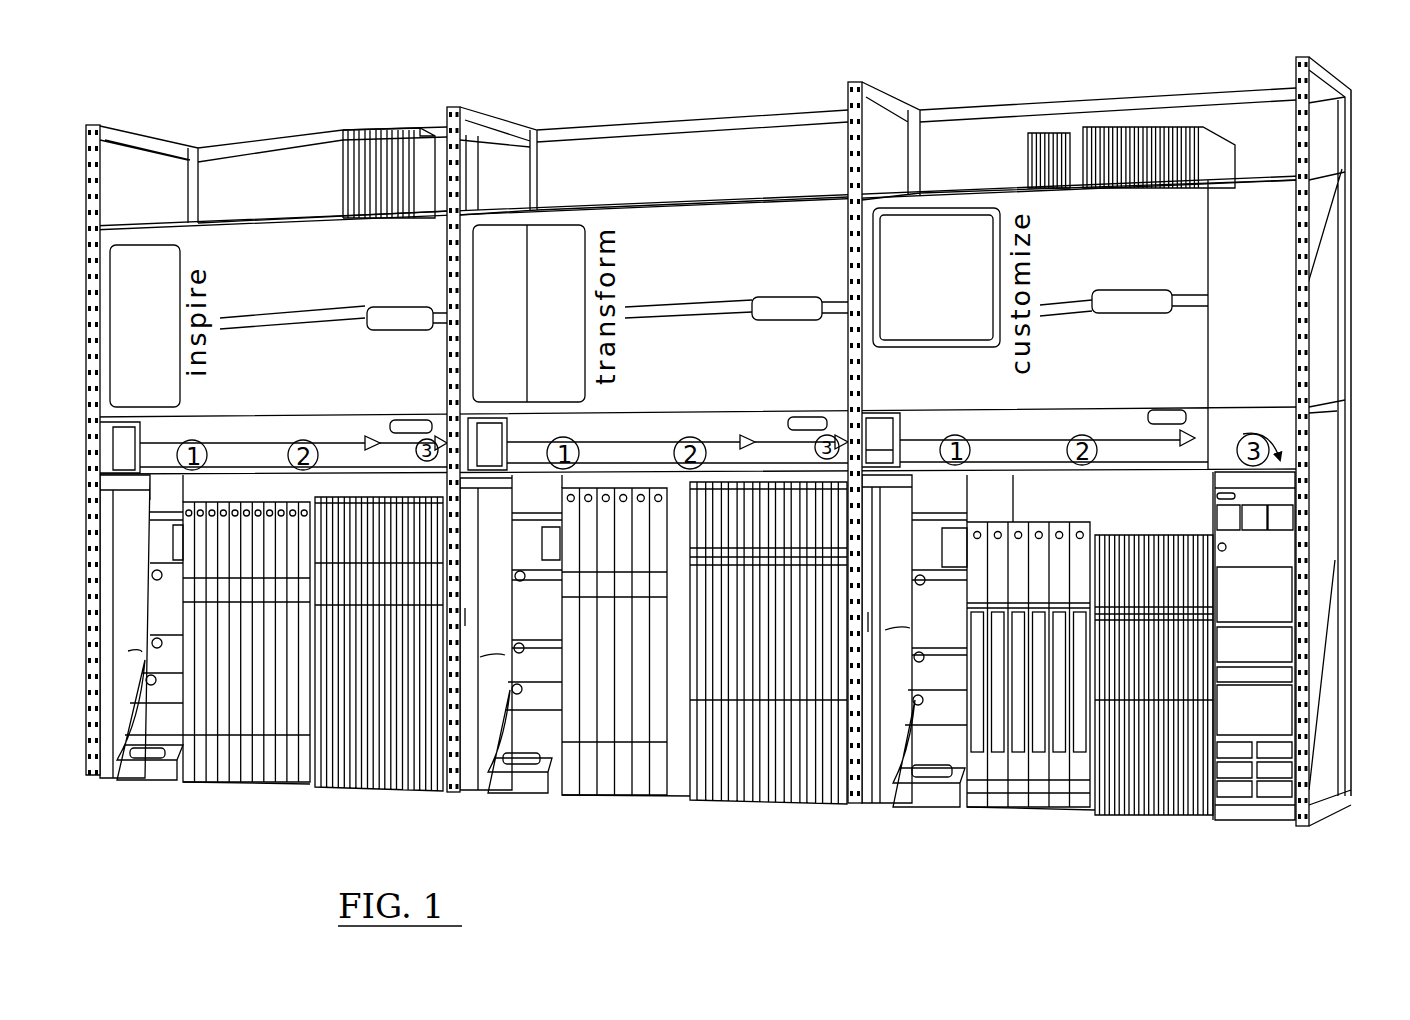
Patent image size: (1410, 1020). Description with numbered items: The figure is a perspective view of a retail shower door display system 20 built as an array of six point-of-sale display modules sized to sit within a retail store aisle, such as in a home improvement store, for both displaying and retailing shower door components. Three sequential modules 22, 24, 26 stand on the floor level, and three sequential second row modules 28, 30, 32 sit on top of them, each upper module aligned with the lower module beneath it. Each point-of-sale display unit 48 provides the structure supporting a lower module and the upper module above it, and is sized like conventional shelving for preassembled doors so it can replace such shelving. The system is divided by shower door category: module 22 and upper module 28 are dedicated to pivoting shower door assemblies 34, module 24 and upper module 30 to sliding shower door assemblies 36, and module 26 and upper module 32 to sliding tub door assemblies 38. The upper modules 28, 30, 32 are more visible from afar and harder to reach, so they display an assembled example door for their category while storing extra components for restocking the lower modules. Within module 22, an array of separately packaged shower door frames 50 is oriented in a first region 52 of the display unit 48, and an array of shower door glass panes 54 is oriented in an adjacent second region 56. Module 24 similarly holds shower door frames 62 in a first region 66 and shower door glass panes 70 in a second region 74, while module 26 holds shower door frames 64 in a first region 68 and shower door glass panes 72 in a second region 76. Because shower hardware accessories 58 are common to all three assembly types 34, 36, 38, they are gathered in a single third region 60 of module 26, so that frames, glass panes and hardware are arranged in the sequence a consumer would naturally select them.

The retail shower door display system 20 is at (1218, 52).
The ground level module for pivoting shower door assemblies 22 is at (165, 795).
The ground level module for sliding shower door assemblies 24 is at (547, 800).
The ground level module for sliding tub door assemblies 26 is at (957, 815).
The second row module 28 is at (258, 114).
The second row module 30 is at (620, 108).
The second row module 32 is at (1012, 94).
The pivoting shower door assembly 34 is at (135, 268).
The sliding shower door assembly 36 is at (560, 240).
The sliding tub door assembly 38 is at (955, 235).
The point-of-sale display unit 48 is at (276, 145).
The shower door frames 50 is at (210, 785).
The first region 52 is at (260, 800).
The shower door glass panes 54 is at (390, 128).
The second region 56 is at (373, 798).
The shower hardware accessories 58 is at (1268, 772).
The third region 60 is at (1278, 815).
The shower door frames 62 is at (585, 800).
The shower door frames 64 is at (978, 808).
The first region 66 is at (633, 818).
The first region 68 is at (1030, 815).
The shower door glass panes 70 is at (712, 800).
The shower door glass panes 72 is at (1062, 133).
The second region 74 is at (765, 815).
The second region 76 is at (1196, 815).